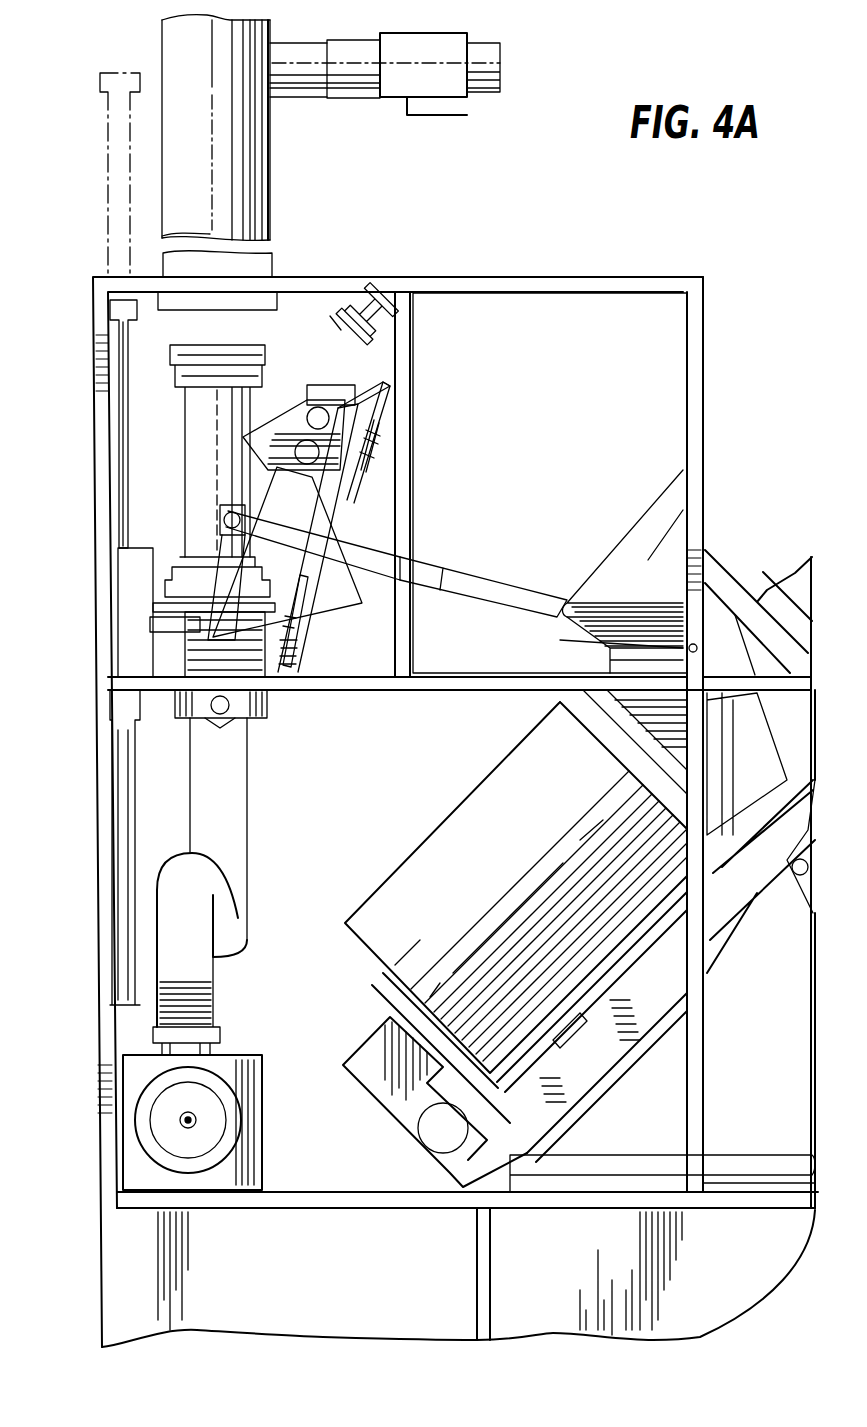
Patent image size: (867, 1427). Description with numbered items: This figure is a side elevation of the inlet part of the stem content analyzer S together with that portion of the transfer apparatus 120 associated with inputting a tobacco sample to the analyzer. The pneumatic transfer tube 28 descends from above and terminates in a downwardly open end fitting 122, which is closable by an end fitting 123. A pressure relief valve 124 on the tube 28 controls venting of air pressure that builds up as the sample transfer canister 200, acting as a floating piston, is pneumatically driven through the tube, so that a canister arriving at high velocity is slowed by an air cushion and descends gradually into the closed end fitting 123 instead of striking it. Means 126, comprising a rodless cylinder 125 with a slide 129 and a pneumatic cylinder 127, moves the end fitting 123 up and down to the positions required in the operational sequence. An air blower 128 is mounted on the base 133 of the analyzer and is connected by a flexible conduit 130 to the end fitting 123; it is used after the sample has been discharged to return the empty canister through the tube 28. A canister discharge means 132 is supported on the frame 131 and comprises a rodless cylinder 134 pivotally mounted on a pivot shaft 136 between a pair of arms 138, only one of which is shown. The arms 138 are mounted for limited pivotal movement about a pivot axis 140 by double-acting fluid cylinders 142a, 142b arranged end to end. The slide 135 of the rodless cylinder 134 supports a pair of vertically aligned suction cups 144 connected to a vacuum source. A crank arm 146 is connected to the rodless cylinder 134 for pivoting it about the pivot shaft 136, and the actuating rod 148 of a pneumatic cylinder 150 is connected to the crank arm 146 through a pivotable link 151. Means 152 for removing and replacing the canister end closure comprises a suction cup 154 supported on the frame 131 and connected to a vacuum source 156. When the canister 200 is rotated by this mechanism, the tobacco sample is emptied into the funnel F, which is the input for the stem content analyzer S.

The pneumatic transfer tube 28 is at (262, 158).
The transfer apparatus portion 120 is at (530, 202).
The open end fitting 122 is at (263, 300).
The end fitting 123 is at (160, 624).
The pressure relief valve 124 is at (463, 98).
The rodless cylinder 125 is at (112, 430).
The means for vertically moving end fitting 126 is at (78, 578).
The pneumatic cylinder 127 is at (130, 795).
The air blower 128 is at (262, 1062).
The slide 129 is at (135, 652).
The flexible conduit 130 is at (232, 812).
The frame 131 is at (585, 292).
The canister discharge means 132 is at (463, 434).
The base 133 is at (110, 1203).
The rodless cylinder 134 is at (340, 620).
The slide 135 is at (285, 415).
The pivot shaft 136 is at (336, 388).
The arms 138 is at (360, 488).
The pivot axis 140 is at (246, 722).
The double-acting fluid cylinder 142a is at (400, 560).
The double-acting fluid cylinder 142b is at (490, 585).
The suction cups 144 is at (240, 512).
The crank arm 146 is at (370, 396).
The actuating rod 148 is at (396, 481).
The pneumatic cylinder 150 is at (318, 650).
The pivotable link 151 is at (395, 430).
The means for removing and replacing end closure 152 is at (379, 255).
The suction cup 154 is at (340, 330).
The vacuum source 156 is at (390, 293).
The sample transfer canister 200 is at (215, 422).
The funnel F is at (592, 580).
The stem content analyzer S is at (470, 797).